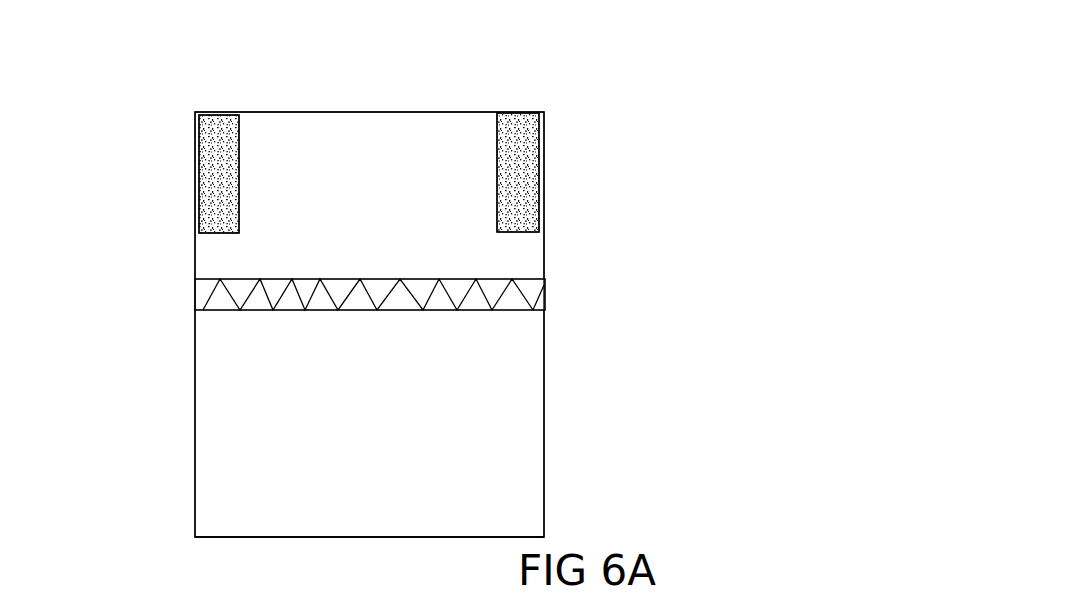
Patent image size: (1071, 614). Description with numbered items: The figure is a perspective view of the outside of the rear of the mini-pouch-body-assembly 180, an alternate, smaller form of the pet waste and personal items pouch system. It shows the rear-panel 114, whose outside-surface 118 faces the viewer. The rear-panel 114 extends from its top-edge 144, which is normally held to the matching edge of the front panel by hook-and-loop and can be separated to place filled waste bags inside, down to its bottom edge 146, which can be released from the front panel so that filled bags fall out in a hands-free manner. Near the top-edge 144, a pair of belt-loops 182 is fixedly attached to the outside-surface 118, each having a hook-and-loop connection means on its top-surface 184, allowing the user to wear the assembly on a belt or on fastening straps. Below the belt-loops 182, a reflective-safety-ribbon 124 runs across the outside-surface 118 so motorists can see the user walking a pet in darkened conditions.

The rear-panel 114 is at (548, 397).
The outside-surface 118 is at (497, 352).
The reflective-safety-ribbon 124 is at (545, 292).
The top-edge 144 is at (357, 110).
The bottom edge 146 is at (407, 538).
The mini-pouch-body-assembly 180 is at (738, 113).
The pair of belt-loops 182 is at (222, 110).
The top-surface 184 is at (213, 168).